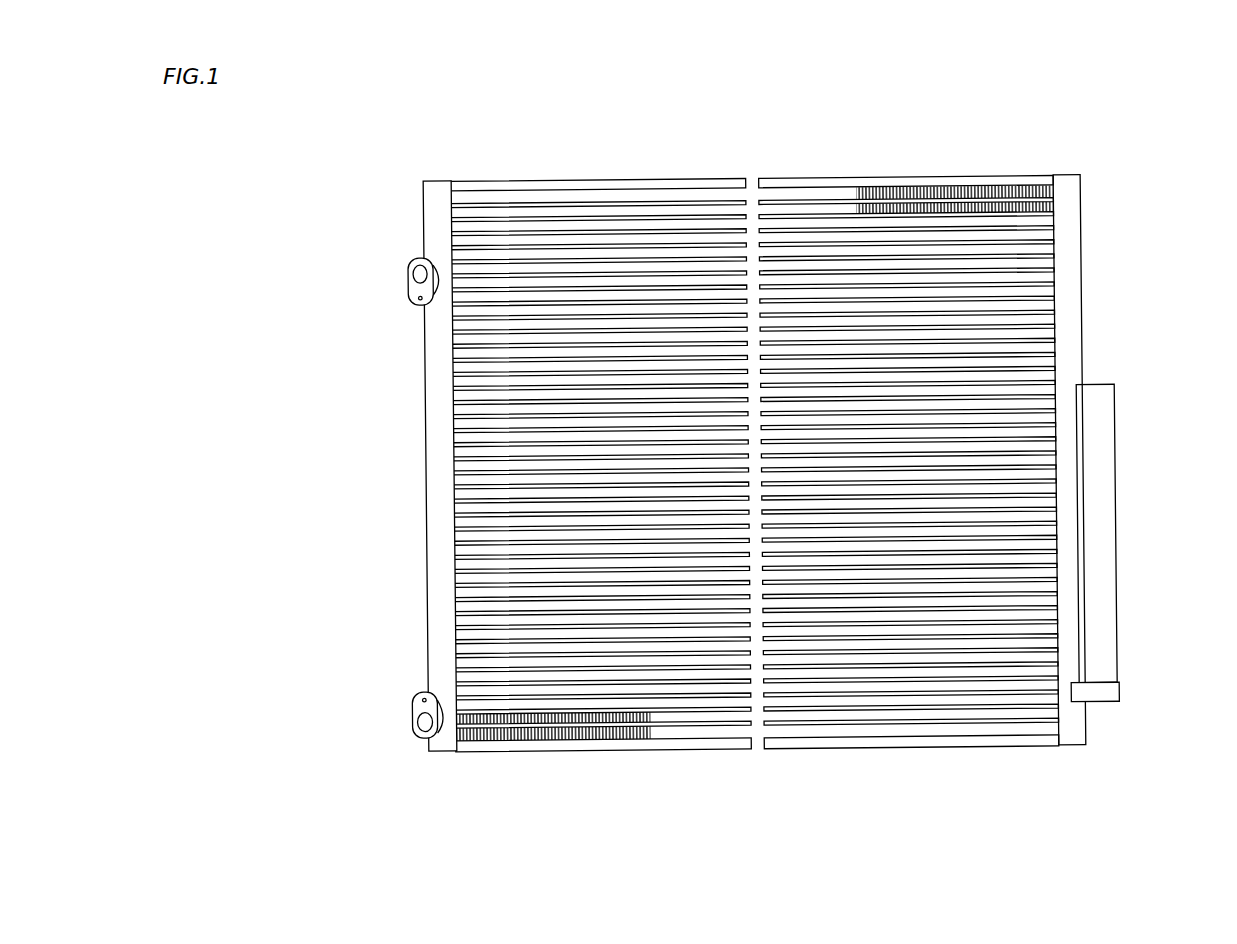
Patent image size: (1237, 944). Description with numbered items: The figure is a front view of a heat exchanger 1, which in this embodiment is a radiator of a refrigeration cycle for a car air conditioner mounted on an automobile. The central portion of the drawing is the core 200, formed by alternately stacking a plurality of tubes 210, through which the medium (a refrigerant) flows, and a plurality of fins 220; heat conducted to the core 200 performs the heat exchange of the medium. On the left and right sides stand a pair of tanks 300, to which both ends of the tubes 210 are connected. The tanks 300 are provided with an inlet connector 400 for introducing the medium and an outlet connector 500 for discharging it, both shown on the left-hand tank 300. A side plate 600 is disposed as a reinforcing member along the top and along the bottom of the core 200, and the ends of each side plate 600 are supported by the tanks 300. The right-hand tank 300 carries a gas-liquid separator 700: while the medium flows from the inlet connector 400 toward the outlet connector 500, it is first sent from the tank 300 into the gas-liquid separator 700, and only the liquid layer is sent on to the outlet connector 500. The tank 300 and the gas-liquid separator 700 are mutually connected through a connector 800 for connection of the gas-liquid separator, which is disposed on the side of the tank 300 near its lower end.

The heat exchanger 1 is at (757, 461).
The core 200 is at (755, 466).
The tubes 210 is at (592, 243).
The fins 220 is at (858, 209).
The tanks 300 is at (425, 463).
The inlet connector 400 is at (409, 279).
The outlet connector 500 is at (410, 720).
The side plate 600 is at (712, 178).
The gas-liquid separator 700 is at (1116, 470).
The connector for connection of the gas-liquid separator 800 is at (1100, 705).